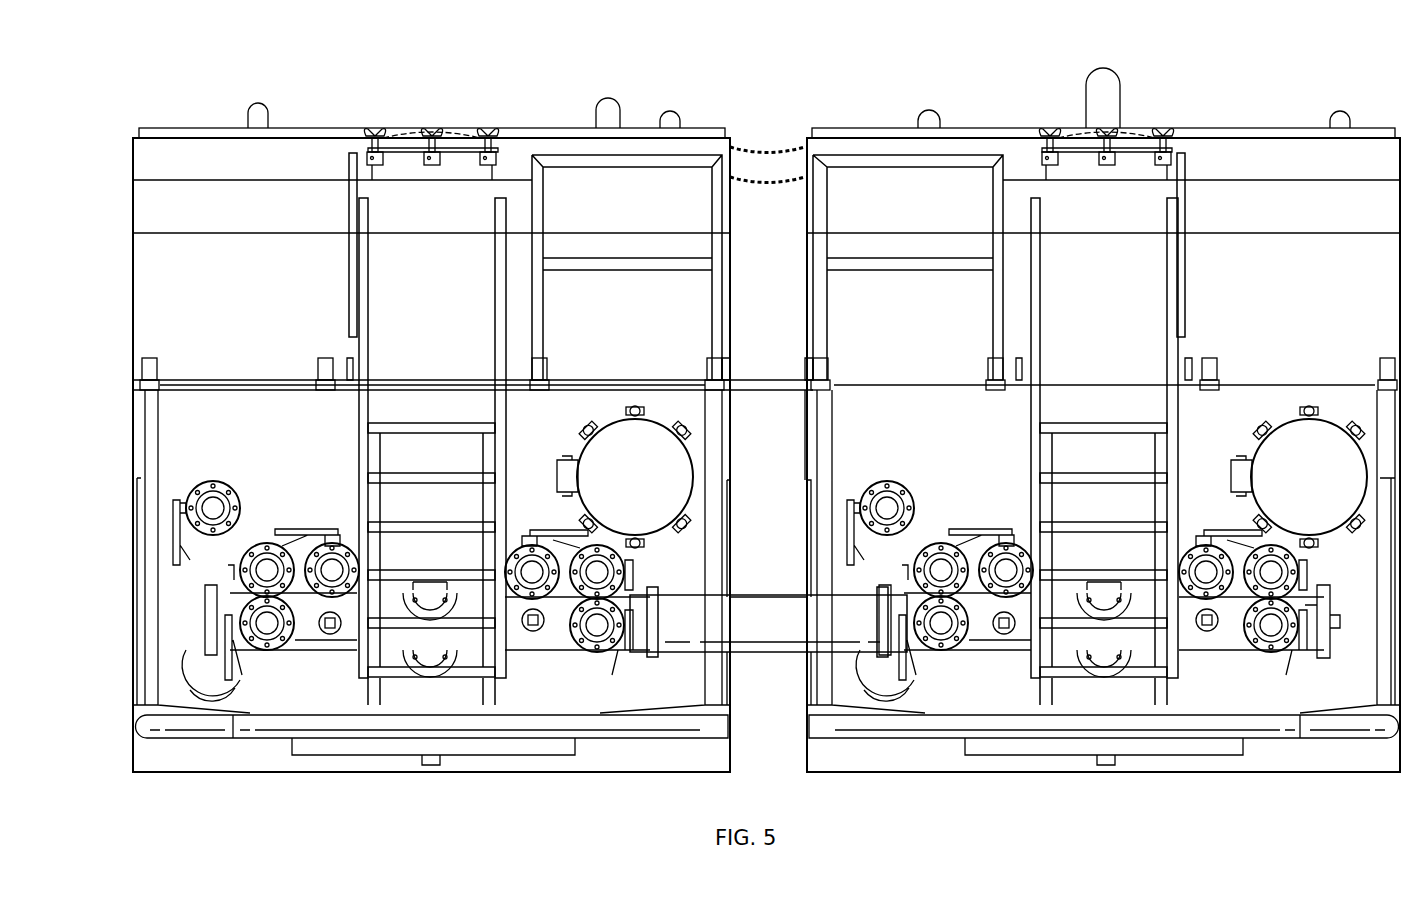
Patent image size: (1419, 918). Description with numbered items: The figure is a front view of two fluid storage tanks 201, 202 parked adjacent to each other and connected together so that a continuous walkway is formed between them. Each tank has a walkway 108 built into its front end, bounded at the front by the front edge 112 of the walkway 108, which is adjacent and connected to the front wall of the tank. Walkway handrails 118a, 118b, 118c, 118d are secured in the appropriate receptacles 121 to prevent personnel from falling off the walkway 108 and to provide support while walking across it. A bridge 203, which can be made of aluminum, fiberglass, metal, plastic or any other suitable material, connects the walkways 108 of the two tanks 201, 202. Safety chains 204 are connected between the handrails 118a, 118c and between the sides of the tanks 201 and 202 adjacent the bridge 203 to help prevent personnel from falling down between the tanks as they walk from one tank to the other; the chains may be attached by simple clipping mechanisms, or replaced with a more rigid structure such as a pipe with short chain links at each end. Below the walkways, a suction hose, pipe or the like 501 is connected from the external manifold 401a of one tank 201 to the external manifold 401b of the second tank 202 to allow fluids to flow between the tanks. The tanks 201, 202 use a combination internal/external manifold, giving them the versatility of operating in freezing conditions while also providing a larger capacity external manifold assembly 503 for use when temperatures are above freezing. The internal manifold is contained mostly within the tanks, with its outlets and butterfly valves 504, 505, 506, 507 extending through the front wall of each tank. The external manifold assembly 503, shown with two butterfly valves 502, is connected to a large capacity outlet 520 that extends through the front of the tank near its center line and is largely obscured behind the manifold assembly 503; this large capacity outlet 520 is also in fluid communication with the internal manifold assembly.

The fluid storage tank 201 is at (180, 112).
The fluid storage tank 202 is at (1285, 112).
The walkway handrail 118a is at (565, 150).
The walkway handrail 118b is at (345, 158).
The walkway handrail 118c is at (965, 150).
The walkway handrail 118d is at (1192, 158).
The safety chain 204 is at (768, 146).
The receptacle 121 is at (160, 358).
The walkway 108 is at (236, 385).
The front edge of the walkway 112 is at (130, 395).
The bridge 203 is at (760, 400).
The suction hose 501 is at (765, 595).
The external manifold 401a is at (662, 615).
The external manifold 401b is at (875, 620).
The butterfly valve 502 is at (270, 650).
The external manifold assembly 503 is at (536, 640).
The butterfly valve 504 is at (255, 520).
The butterfly valve 505 is at (335, 540).
The butterfly valve 506 is at (515, 545).
The butterfly valve 507 is at (605, 535).
The large capacity outlet 520 is at (402, 660).